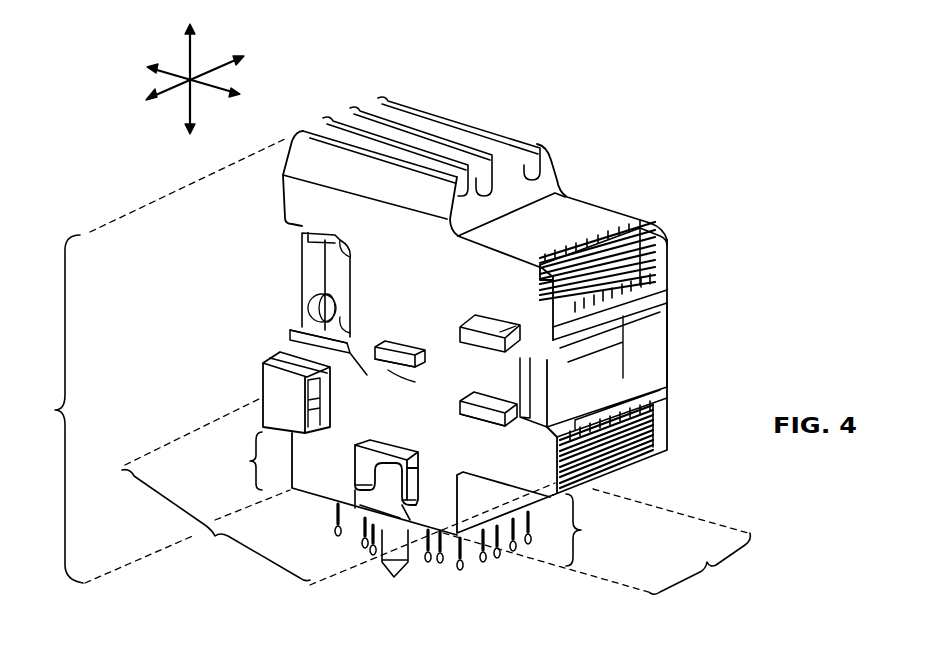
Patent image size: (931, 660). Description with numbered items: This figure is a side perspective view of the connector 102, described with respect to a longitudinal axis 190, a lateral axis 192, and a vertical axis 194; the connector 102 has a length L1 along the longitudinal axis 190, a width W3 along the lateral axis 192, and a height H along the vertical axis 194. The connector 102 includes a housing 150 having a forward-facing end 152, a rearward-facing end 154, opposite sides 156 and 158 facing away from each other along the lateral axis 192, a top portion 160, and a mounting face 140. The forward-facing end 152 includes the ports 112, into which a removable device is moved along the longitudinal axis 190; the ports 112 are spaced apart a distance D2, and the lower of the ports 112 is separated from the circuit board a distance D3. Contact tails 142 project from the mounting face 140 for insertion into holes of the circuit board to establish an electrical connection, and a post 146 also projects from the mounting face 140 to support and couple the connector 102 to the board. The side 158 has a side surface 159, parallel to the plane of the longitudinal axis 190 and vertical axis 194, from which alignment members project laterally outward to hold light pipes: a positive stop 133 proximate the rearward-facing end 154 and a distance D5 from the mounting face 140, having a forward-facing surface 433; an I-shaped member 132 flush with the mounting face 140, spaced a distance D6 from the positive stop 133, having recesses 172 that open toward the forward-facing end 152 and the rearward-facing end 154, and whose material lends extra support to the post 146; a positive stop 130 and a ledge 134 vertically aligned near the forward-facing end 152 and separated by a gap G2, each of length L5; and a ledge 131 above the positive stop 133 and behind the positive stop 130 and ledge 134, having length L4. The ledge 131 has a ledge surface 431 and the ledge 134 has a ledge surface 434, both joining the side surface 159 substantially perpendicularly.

The connector 102 is at (469, 319).
The ports 112 is at (668, 276).
The positive stop 130 is at (483, 325).
The ledge 131 is at (423, 323).
The I-shaped member 132 is at (384, 468).
The positive stop 133 is at (301, 392).
The ledge 134 is at (485, 413).
The mounting face 140 is at (425, 542).
The contact tails 142 is at (443, 556).
The post 146 is at (390, 568).
The housing 150 is at (585, 210).
The forward-facing end 152 is at (681, 350).
The rearward-facing end 154 is at (231, 290).
The side 156 is at (438, 97).
The side 158 is at (375, 225).
The side surface 159 is at (416, 274).
The top portion 160 is at (475, 151).
The recesses 172 is at (352, 478).
The longitudinal axis 190 is at (170, 72).
The lateral axis 192 is at (170, 90).
The vertical axis 194 is at (192, 52).
The ledge surface 431 is at (425, 345).
The forward-facing surface 433 is at (322, 400).
The ledge surface 434 is at (473, 394).
The height H is at (155, 360).
The length L1 is at (216, 489).
The length L4 is at (414, 388).
The length L5 is at (495, 320).
The distance D2 is at (670, 340).
The distance D3 is at (581, 530).
The distance D5 is at (242, 461).
The distance D6 is at (290, 335).
The gap G2 is at (532, 380).
The width W3 is at (700, 574).